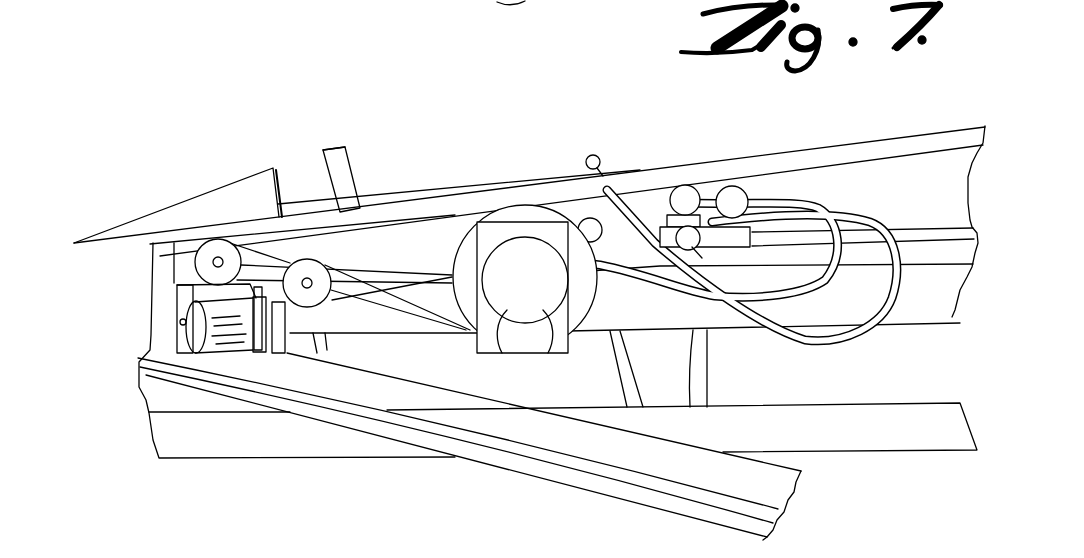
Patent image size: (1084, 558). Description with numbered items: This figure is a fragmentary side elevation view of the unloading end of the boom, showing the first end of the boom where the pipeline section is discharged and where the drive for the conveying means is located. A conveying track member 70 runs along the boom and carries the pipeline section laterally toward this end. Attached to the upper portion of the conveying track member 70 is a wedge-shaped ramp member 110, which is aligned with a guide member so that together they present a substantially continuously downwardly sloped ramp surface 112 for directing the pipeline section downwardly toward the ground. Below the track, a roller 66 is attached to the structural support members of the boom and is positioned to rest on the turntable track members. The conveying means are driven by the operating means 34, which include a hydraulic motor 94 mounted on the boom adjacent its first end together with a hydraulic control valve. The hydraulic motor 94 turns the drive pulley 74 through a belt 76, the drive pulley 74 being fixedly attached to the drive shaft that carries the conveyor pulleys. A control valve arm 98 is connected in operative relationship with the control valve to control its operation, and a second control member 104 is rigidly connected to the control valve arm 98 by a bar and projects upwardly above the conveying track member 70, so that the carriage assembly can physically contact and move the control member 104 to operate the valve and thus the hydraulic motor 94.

The conveying track member 70 is at (827, 155).
The ramp surface 112 is at (188, 198).
The wedge-shaped ramp member 110 is at (237, 203).
The second control member 104 is at (342, 145).
The control valve arm 98 is at (600, 153).
The drive pulley 74 is at (205, 262).
The belt 76 is at (417, 312).
The hydraulic motor 94 is at (525, 303).
The operating means 34 is at (574, 345).
The roller 66 is at (222, 342).